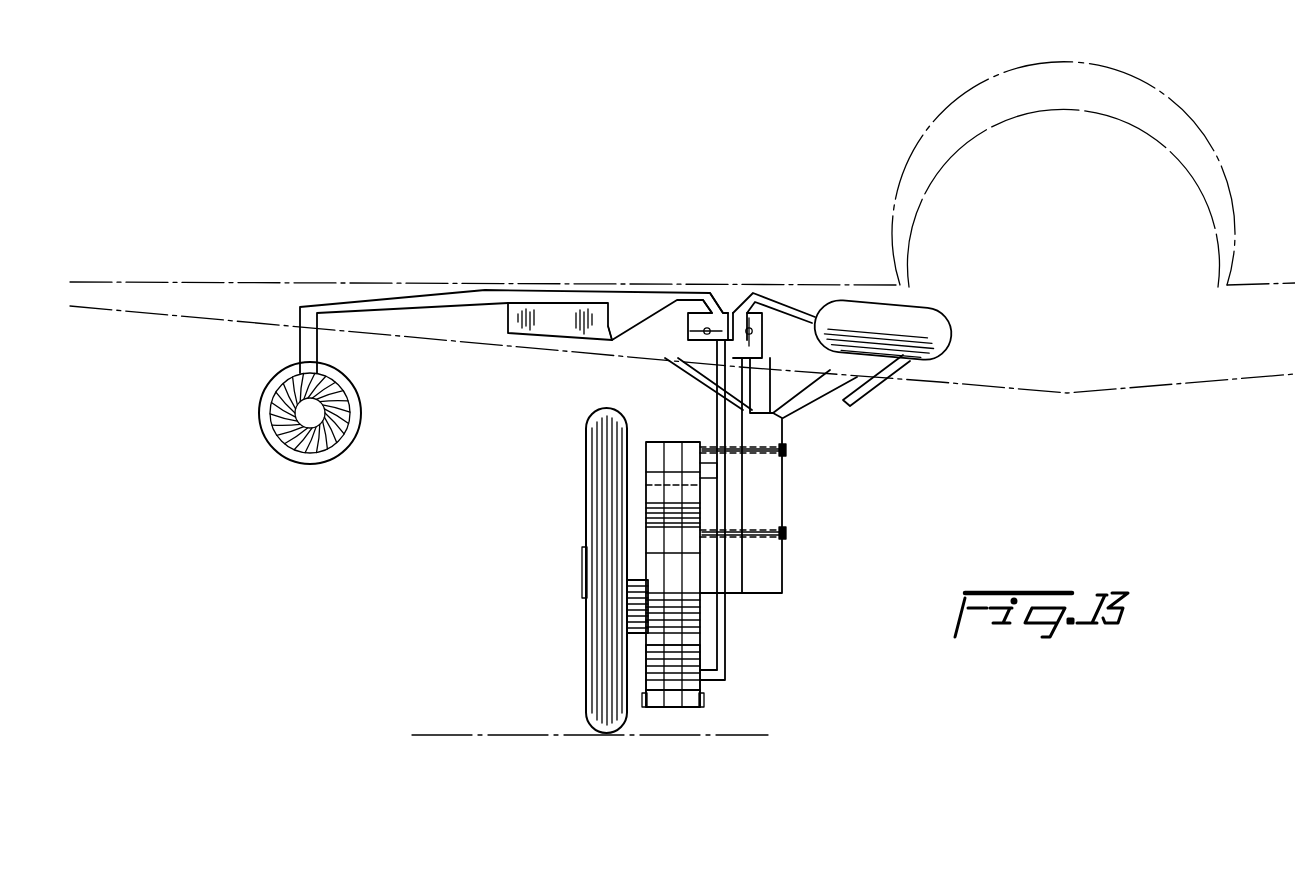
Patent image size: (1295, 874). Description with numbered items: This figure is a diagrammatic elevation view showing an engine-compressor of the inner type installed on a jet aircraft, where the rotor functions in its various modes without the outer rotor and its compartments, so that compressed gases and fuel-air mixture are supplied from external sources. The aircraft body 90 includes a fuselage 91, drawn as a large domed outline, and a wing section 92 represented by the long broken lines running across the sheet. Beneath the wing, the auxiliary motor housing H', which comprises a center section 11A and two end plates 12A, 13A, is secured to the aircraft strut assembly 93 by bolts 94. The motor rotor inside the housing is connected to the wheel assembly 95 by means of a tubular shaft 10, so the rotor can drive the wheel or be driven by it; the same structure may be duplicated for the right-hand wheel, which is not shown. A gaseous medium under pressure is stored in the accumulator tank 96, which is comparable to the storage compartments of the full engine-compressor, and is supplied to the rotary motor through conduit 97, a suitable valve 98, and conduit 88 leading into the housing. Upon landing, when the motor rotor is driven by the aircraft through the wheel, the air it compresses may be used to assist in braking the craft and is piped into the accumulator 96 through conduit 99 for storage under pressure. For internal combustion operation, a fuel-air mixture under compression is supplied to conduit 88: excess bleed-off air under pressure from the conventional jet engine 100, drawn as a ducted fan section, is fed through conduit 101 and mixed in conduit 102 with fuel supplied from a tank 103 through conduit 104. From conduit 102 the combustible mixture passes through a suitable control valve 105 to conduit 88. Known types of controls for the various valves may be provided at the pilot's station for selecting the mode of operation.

The aircraft body 90 is at (1186, 106).
The fuselage 91 is at (905, 160).
The wing section 92 is at (148, 283).
The aircraft strut assembly 93 is at (780, 553).
The bolts 94 is at (786, 534).
The wheel assembly 95 is at (586, 506).
The accumulator tank 96 is at (926, 318).
The conduit 97 is at (786, 292).
The valve 98 is at (752, 334).
The conduit 99 is at (878, 384).
The jet engine 100 is at (266, 430).
The conduit 101 is at (382, 300).
The conduit 102 is at (683, 296).
The tank 103 is at (560, 328).
The conduit 104 is at (636, 310).
The control valve 105 is at (705, 335).
The conduit 88 is at (728, 612).
The tubular shaft 10 is at (634, 600).
The center section 11A is at (676, 712).
The end plate 12A is at (656, 712).
The end plate 13A is at (700, 685).
The auxiliary motor housing H' is at (762, 676).